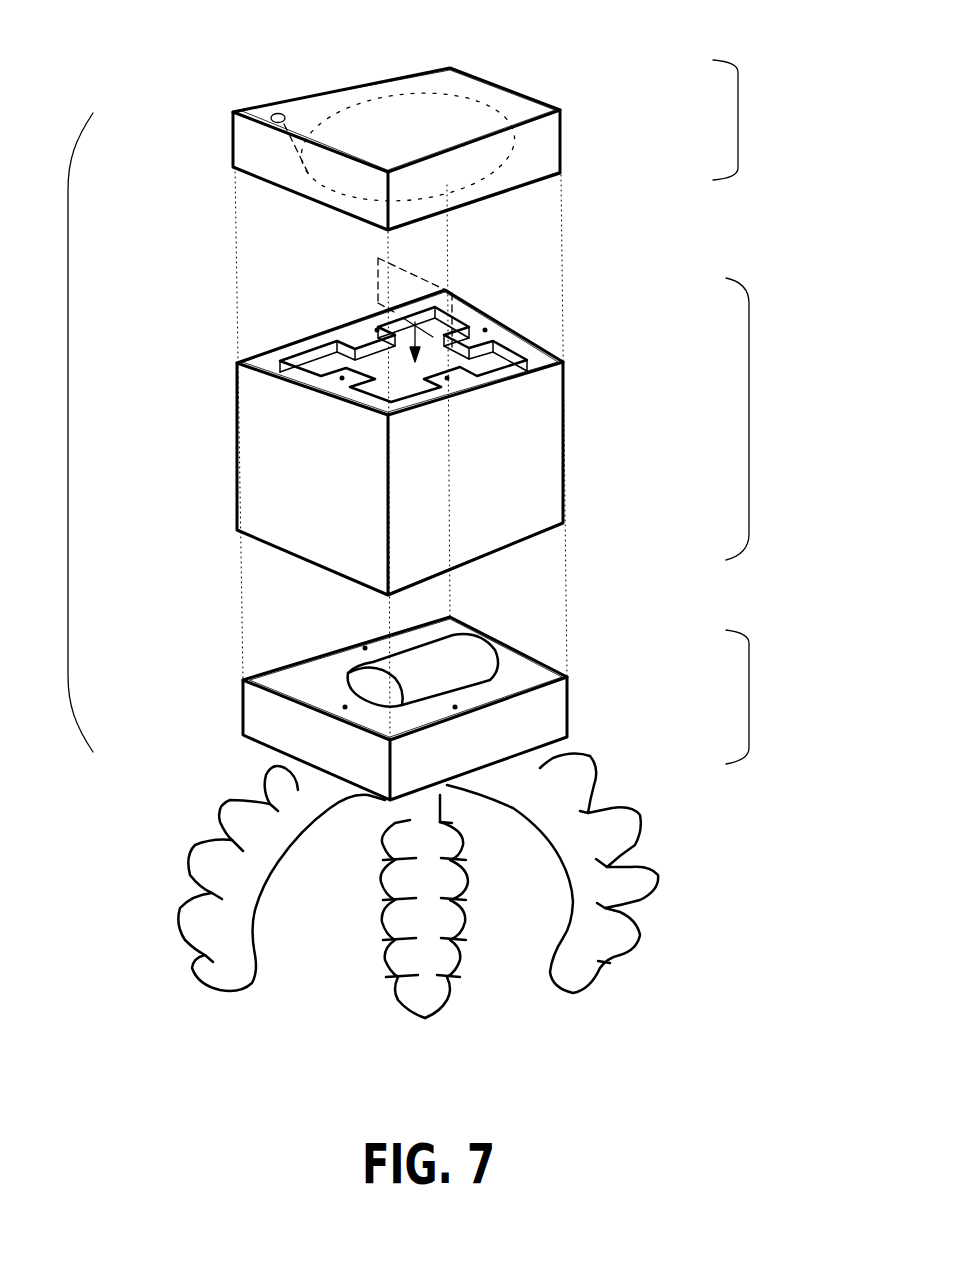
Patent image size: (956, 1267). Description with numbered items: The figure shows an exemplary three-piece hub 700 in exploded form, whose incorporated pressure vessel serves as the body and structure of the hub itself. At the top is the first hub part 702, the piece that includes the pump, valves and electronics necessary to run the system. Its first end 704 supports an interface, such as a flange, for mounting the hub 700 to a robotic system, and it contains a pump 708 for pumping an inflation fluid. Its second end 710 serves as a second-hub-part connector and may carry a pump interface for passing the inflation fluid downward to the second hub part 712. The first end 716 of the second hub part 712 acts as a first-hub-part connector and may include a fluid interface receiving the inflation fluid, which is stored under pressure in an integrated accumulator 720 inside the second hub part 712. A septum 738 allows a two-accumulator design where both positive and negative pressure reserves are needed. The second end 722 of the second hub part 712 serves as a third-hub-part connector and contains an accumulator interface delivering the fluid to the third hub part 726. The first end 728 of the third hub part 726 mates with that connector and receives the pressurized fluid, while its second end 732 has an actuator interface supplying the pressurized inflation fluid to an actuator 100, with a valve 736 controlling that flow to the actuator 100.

The three-piece hub 700 is at (68, 441).
The first hub part 702 is at (762, 120).
The first end 704 is at (350, 96).
The pump 708 is at (465, 110).
The second end 710 is at (500, 205).
The second hub part 712 is at (770, 418).
The first end 716 is at (277, 363).
The integrated accumulator 720 is at (502, 353).
The second end 722 is at (515, 546).
The third hub part 726 is at (770, 698).
The first end 728 is at (308, 682).
The second end 732 is at (258, 755).
The valve 736 is at (275, 118).
The septum 738 is at (377, 282).
The actuator 100 is at (188, 950).